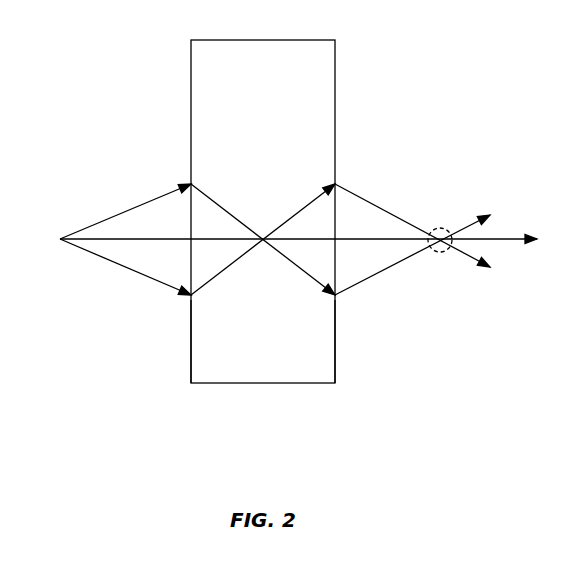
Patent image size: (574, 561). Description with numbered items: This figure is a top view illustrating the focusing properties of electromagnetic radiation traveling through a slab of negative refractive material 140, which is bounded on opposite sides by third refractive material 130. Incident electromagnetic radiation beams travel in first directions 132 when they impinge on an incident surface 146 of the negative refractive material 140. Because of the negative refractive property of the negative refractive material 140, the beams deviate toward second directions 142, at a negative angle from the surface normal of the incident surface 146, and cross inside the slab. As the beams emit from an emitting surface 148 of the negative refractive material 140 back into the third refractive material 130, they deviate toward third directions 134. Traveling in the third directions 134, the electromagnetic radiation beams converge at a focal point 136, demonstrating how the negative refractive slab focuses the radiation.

The third refractive material 130 is at (291, 155).
The first directions 132 is at (115, 210).
The third directions 134 is at (363, 193).
The focal point 136 is at (443, 228).
The negative refractive material 140 is at (263, 211).
The second directions 142 is at (307, 205).
The incident surface 146 is at (190, 347).
The emitting surface 148 is at (336, 353).